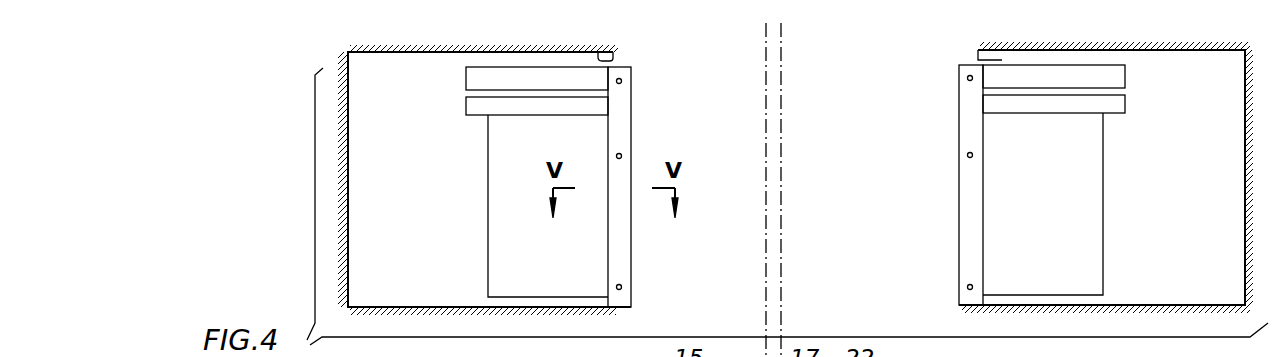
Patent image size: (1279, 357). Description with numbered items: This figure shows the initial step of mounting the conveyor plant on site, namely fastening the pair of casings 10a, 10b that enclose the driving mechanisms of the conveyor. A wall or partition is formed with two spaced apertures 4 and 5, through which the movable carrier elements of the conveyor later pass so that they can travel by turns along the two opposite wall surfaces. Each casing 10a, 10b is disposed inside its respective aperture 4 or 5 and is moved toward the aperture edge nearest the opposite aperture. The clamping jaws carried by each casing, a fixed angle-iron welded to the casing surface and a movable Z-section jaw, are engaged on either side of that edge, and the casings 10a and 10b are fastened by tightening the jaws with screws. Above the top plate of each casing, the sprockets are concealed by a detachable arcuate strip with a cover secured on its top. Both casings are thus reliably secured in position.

The aperture 4 is at (348, 250).
The aperture 5 is at (1245, 255).
The casing 10a is at (1073, 220).
The casing 10b is at (500, 207).